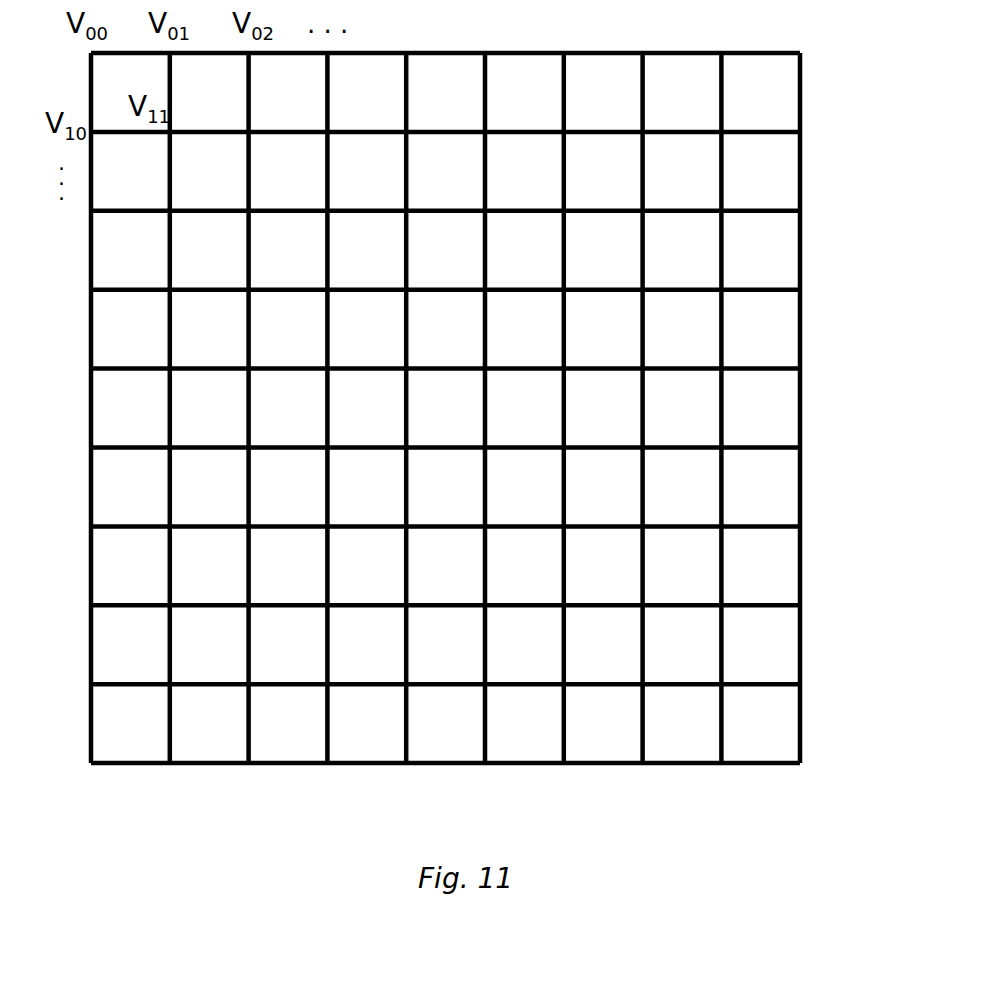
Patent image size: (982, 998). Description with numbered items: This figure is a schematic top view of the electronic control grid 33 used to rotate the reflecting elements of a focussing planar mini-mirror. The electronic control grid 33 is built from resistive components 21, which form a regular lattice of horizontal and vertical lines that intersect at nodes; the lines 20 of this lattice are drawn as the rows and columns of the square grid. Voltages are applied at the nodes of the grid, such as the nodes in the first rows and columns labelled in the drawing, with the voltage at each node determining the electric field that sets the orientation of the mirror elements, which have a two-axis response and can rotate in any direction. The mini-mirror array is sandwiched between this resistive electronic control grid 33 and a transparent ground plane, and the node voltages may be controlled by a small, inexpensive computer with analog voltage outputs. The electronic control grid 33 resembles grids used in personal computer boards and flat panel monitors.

The row lines of array 20 is at (678, 692).
The resistive components 21 is at (800, 337).
The electronic control grid 33 is at (861, 729).